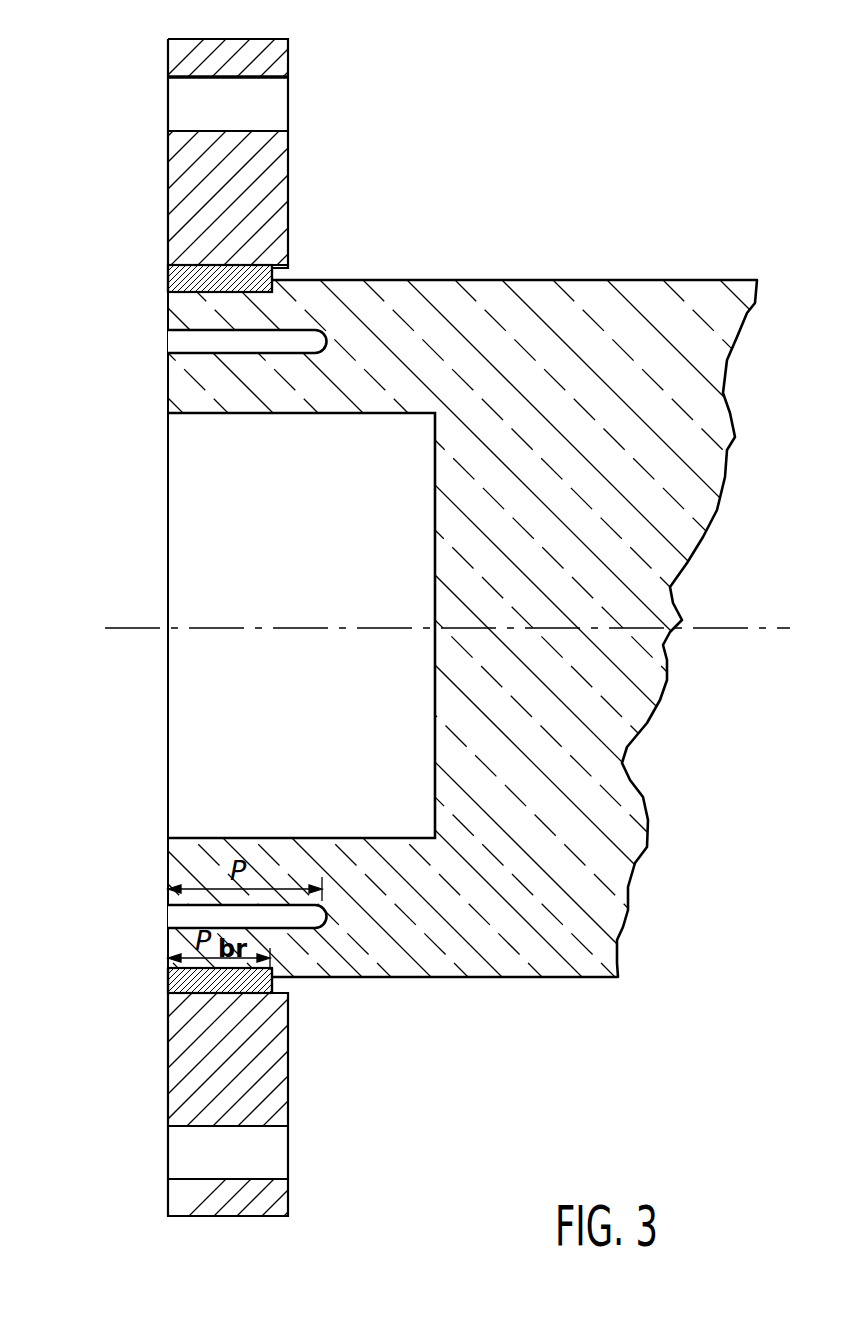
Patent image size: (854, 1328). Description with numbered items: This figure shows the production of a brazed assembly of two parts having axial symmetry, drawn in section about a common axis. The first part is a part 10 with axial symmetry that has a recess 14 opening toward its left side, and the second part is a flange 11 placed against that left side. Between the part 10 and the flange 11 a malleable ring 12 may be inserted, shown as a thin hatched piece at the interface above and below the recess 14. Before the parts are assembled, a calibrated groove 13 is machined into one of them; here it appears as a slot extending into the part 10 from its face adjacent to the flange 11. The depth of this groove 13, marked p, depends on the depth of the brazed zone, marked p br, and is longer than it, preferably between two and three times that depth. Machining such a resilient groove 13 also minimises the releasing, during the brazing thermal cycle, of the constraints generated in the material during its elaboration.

The part with axial symmetry 10 is at (188, 875).
The flange 11 is at (182, 60).
The malleable ring 12 is at (170, 275).
The calibrated groove 13 is at (190, 340).
The recess 14 is at (207, 515).